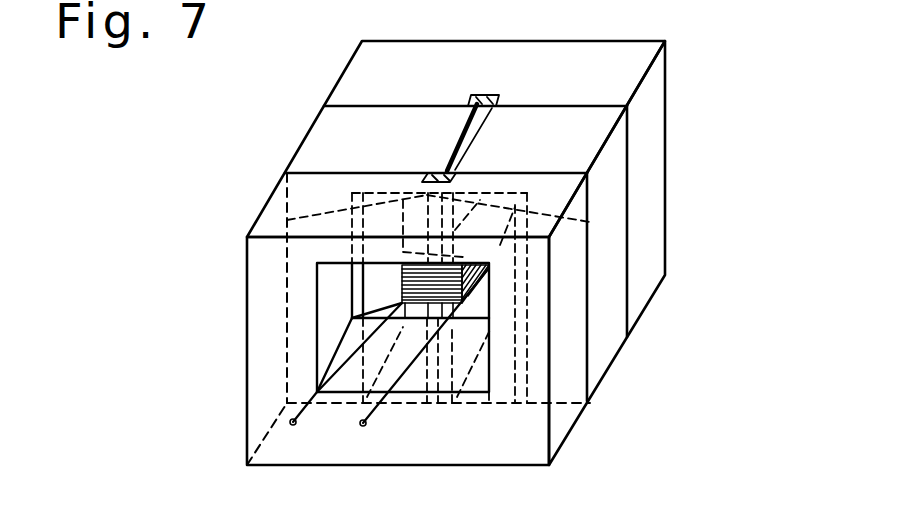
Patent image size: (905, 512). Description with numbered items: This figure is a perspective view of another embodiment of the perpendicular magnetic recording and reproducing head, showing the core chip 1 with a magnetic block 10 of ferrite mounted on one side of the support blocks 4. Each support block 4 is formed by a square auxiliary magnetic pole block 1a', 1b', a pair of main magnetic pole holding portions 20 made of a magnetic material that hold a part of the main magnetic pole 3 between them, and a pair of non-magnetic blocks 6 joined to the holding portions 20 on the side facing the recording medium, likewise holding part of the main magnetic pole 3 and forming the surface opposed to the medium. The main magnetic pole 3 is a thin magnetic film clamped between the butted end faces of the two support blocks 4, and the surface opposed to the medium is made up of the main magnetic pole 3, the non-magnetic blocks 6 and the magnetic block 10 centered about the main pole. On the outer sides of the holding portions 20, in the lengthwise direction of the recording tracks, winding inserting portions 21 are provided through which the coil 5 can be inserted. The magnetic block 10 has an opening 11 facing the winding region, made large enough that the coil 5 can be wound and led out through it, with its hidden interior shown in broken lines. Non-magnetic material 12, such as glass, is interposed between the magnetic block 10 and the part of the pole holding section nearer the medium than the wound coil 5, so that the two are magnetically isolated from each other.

The core chip 1 is at (744, 250).
The auxiliary magnetic pole block 1a' is at (647, 392).
The auxiliary magnetic pole block 1b' is at (386, 319).
The main magnetic pole 3 is at (466, 137).
The support block 4 is at (612, 305).
The coil 5 is at (375, 412).
The non-magnetic block 6 is at (310, 148).
The magnetic block 10 is at (638, 67).
The opening 11 is at (328, 302).
The non-magnetic material 12 is at (455, 171).
The main magnetic pole holding portion 20 is at (450, 318).
The winding inserting portion 21 is at (378, 390).